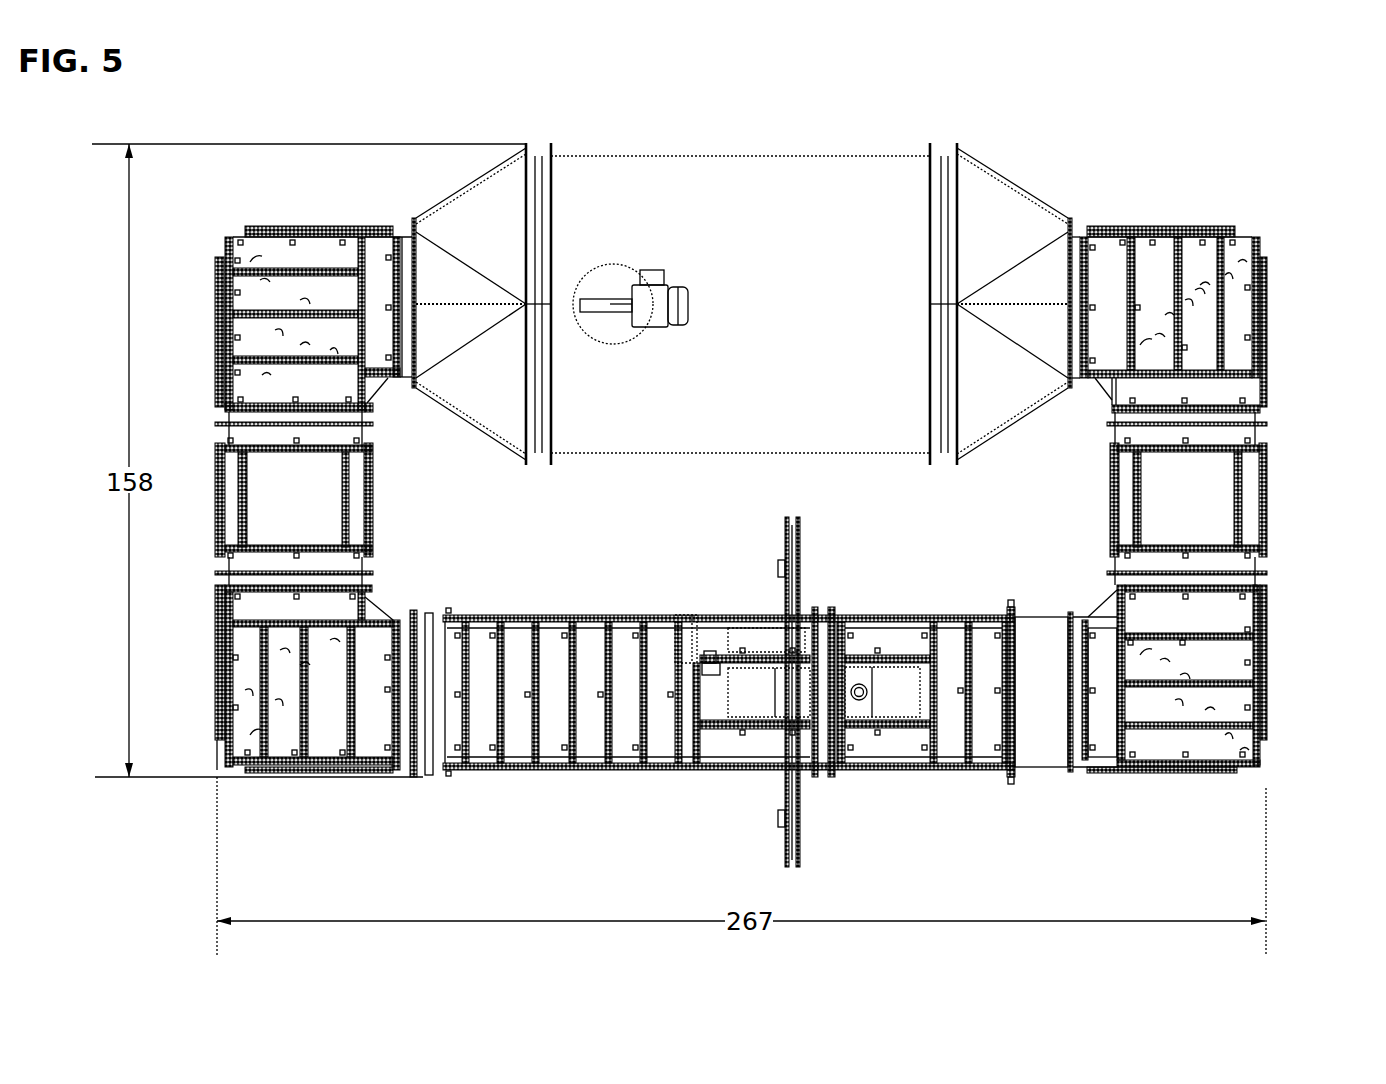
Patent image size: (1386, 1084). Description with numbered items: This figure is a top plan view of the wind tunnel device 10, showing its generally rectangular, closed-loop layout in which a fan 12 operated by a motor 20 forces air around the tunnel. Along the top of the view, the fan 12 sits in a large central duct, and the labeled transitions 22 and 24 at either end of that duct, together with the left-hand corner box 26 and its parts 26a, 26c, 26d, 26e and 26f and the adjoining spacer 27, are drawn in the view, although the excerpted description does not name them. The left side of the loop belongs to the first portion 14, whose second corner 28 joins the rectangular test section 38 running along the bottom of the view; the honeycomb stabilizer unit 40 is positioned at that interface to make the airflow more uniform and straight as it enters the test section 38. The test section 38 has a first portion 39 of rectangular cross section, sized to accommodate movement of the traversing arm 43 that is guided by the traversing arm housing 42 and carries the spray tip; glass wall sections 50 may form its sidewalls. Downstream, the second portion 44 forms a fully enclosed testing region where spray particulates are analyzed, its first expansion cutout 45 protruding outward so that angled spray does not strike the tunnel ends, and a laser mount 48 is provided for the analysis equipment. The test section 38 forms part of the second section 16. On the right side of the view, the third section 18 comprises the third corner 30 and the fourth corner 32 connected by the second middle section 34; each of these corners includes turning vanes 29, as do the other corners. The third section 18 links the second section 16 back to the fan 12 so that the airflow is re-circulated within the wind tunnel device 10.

The wind tunnel device 10 is at (1090, 128).
The fan 12 is at (695, 135).
The first portion 14 is at (193, 538).
The second section 16 is at (661, 795).
The third section 18 is at (1330, 437).
The motor 20 is at (672, 292).
The left transition 22 is at (420, 218).
The right transition 24 is at (1035, 200).
The filter housing 26 is at (215, 285).
The housing side wall 26a is at (228, 230).
The housing top wall 26c is at (280, 227).
The housing outer wall 26d is at (215, 322).
The housing rear panel 26e is at (389, 380).
The housing corner 26f is at (368, 400).
The spacer section 27 is at (220, 487).
The second corner 28 is at (215, 680).
The turning vanes 29 is at (290, 298).
The third corner 30 is at (1268, 708).
The fourth corner 32 is at (1268, 318).
The second middle section 34 is at (1268, 497).
The test section 38 is at (489, 775).
The first portion 39 is at (585, 775).
The honeycomb stabilizer unit 40 is at (429, 778).
The traversing arm housing 42 is at (706, 653).
The traversing arm 43 is at (712, 653).
The second portion 44 is at (857, 770).
The first expansion cutout 45 is at (890, 677).
The laser mount 48 is at (800, 860).
The glass wall sections 50 is at (1045, 767).